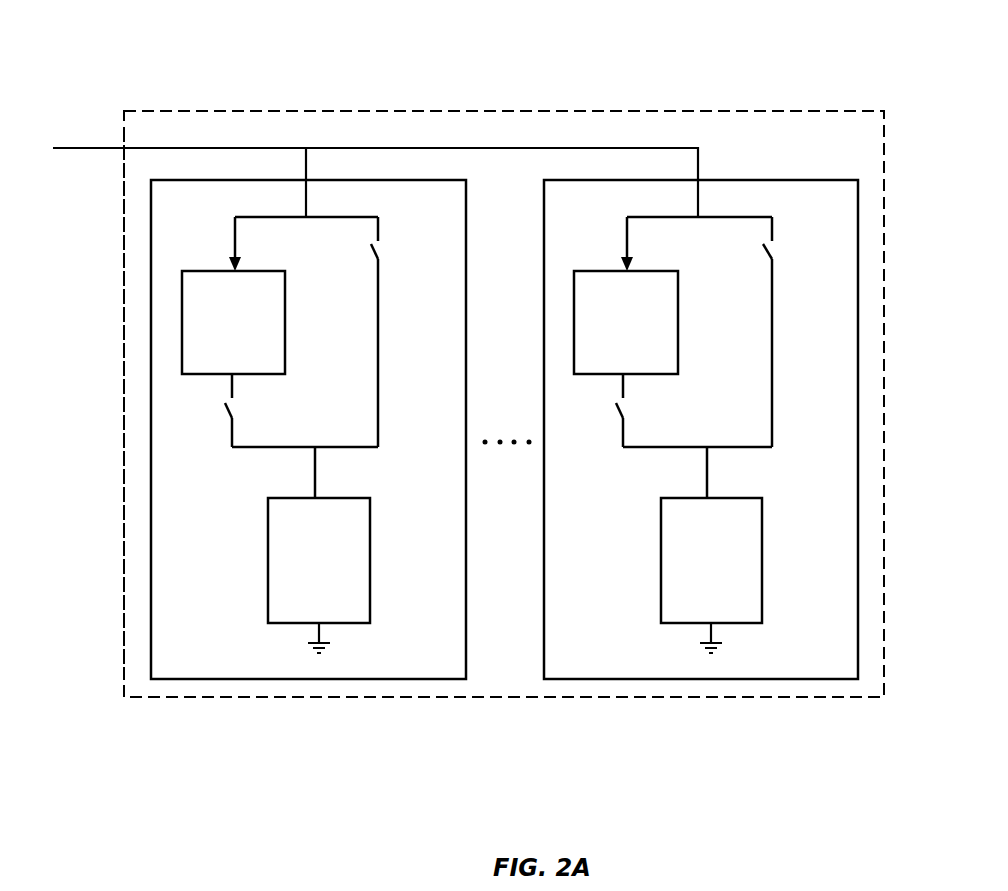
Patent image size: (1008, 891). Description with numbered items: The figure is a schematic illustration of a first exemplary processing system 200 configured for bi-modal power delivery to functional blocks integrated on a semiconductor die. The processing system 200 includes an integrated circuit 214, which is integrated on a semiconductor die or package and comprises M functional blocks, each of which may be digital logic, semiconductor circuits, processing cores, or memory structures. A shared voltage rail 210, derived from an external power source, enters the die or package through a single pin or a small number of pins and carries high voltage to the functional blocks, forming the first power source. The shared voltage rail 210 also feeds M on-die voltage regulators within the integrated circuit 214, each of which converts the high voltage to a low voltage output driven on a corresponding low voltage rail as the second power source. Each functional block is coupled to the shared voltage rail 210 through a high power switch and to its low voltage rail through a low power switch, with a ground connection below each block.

The processing system 200 is at (116, 84).
The shared voltage rail 210 is at (433, 148).
The integrated circuit 214 is at (124, 229).